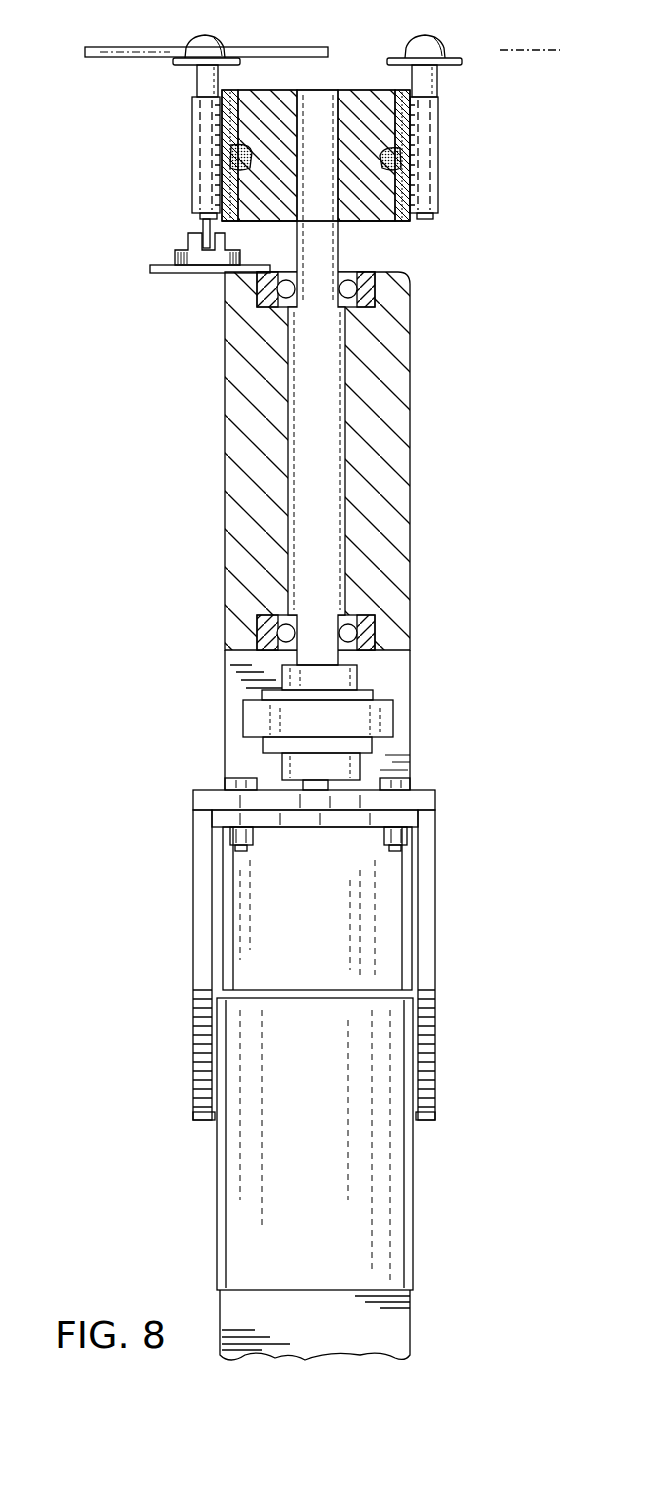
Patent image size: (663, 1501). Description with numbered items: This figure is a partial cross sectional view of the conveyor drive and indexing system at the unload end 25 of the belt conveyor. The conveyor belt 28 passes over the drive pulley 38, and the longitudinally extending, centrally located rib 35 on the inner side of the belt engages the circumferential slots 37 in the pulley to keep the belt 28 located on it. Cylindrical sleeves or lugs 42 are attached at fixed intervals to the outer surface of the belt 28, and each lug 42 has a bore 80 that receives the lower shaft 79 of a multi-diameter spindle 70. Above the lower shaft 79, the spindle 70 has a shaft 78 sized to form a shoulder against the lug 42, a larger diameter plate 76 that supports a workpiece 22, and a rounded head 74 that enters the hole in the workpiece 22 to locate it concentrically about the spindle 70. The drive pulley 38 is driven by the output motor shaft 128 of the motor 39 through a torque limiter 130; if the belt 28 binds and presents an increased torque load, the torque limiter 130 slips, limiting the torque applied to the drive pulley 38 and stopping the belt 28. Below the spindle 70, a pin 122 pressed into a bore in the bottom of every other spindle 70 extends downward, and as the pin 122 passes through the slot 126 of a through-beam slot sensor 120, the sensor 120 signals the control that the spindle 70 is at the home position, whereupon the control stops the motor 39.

The workpieces 22 is at (140, 32).
The unload end 25 is at (470, 316).
The conveyor belt 28 is at (238, 86).
The rib 35 is at (398, 155).
The circumferential slots 37 is at (404, 162).
The drive pulley 38 is at (358, 223).
The motor 39 is at (322, 1220).
The lugs 42 is at (193, 157).
The spindle 70 is at (172, 66).
The head 74 is at (208, 36).
The plate 76 is at (195, 75).
The shaft 78 is at (224, 87).
The lower shaft 79 is at (205, 126).
The bore 80 is at (197, 189).
The sensor 120 is at (175, 256).
The pin 122 is at (203, 222).
The slot 126 is at (221, 238).
The output motor shaft 128 is at (340, 786).
The torque limiter 130 is at (400, 697).